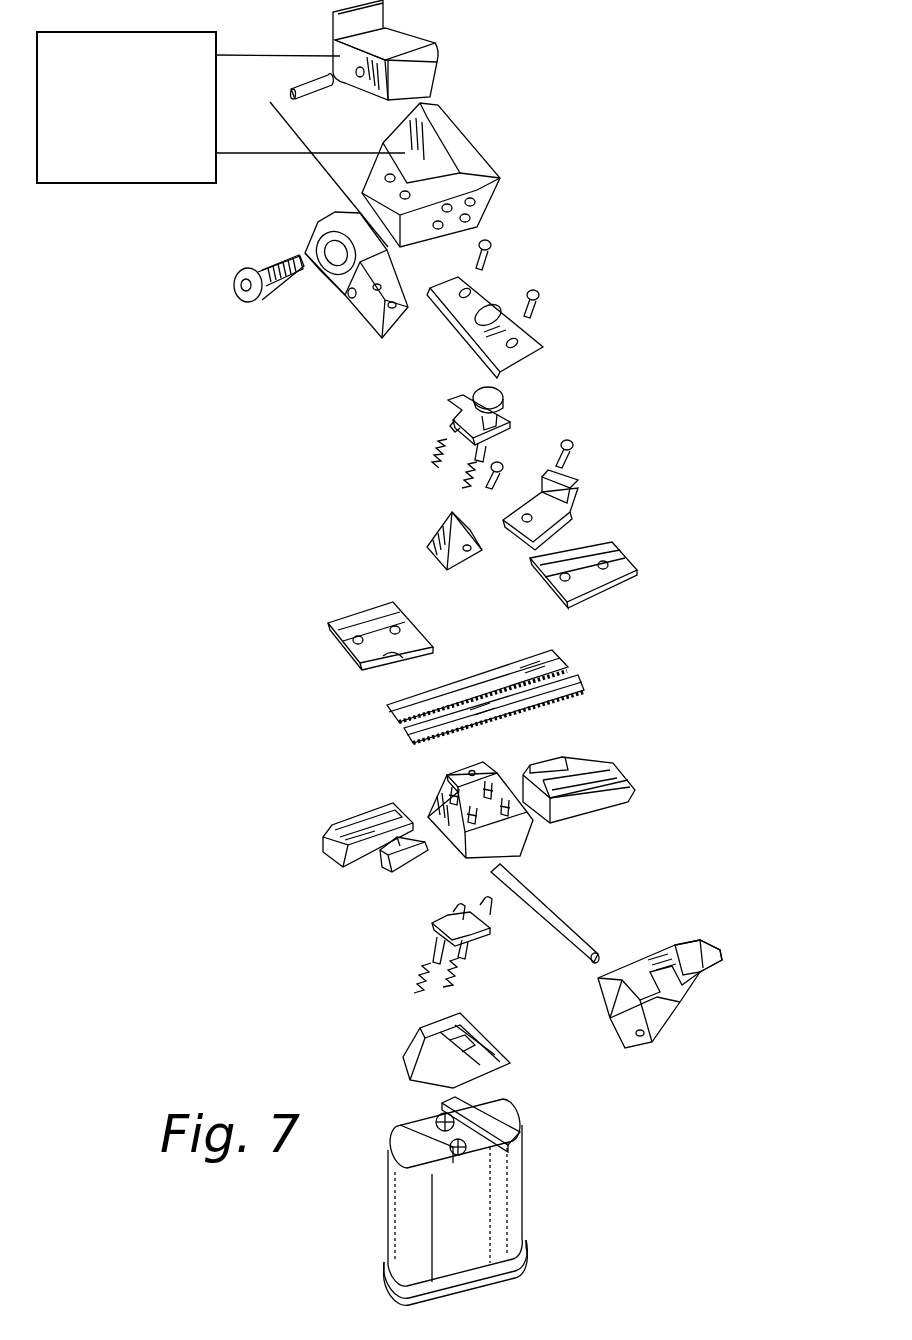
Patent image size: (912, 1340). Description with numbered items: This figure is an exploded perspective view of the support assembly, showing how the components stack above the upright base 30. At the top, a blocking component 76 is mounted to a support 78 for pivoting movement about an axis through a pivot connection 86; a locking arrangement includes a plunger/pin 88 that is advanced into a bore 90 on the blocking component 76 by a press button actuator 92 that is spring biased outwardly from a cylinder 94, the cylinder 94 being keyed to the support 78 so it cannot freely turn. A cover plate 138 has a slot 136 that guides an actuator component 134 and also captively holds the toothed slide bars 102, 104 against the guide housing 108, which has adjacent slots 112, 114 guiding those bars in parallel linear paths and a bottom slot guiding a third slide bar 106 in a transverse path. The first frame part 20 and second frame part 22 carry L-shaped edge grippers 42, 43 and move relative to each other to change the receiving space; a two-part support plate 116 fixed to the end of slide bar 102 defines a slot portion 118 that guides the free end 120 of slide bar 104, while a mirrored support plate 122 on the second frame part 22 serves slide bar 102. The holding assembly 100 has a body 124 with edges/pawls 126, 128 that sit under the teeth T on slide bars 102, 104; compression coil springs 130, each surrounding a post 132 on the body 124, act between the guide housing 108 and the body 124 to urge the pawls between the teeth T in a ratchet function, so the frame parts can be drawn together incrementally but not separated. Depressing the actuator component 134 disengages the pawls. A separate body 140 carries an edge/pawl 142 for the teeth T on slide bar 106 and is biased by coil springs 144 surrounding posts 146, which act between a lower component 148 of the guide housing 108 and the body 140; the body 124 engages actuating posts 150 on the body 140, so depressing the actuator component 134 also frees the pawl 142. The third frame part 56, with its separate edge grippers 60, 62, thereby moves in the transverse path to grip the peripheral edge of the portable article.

The pivot connection 86 is at (139, 157).
The blocking component 76 is at (410, 42).
The plunger/pin 88 is at (315, 82).
The bore 90 is at (360, 78).
The support 78 is at (445, 150).
The press button actuator 92 is at (235, 286).
The cylinder 94 is at (270, 268).
The edge gripper 42 is at (306, 305).
The slot 136 is at (492, 315).
The cover plate 138 is at (478, 288).
The edge/pawl 128 is at (460, 400).
The actuator component 134 is at (495, 398).
The holding assembly 100 is at (555, 380).
The edge/pawl 126 is at (520, 418).
The body 124 is at (450, 408).
The post 132 is at (452, 428).
The compression coil springs 130 is at (462, 478).
The edge gripper 43 is at (575, 490).
The support plate 122 is at (620, 590).
The second frame part 22 is at (640, 570).
The support plate 116 is at (345, 648).
The first frame part 20 is at (438, 500).
The toothed slide bar 104 is at (500, 668).
The free end 120 is at (390, 713).
The toothed slide bar 102 is at (585, 685).
The guide housing 108 is at (440, 790).
The slot 114 is at (495, 778).
The slot 112 is at (485, 825).
The slot portion 118 is at (385, 868).
The toothed slide bar 106 is at (548, 892).
The actuating posts 150 is at (535, 910).
The teeth T is at (548, 920).
The body 140 is at (478, 945).
The posts 146 is at (440, 920).
The coil springs 144 is at (415, 995).
The edge/pawl 142 is at (495, 935).
The lower component 148 is at (488, 1075).
The third frame part 56 is at (718, 948).
The edge gripper 60 is at (660, 1045).
The edge gripper 62 is at (720, 965).
The upright base 30 is at (415, 1227).